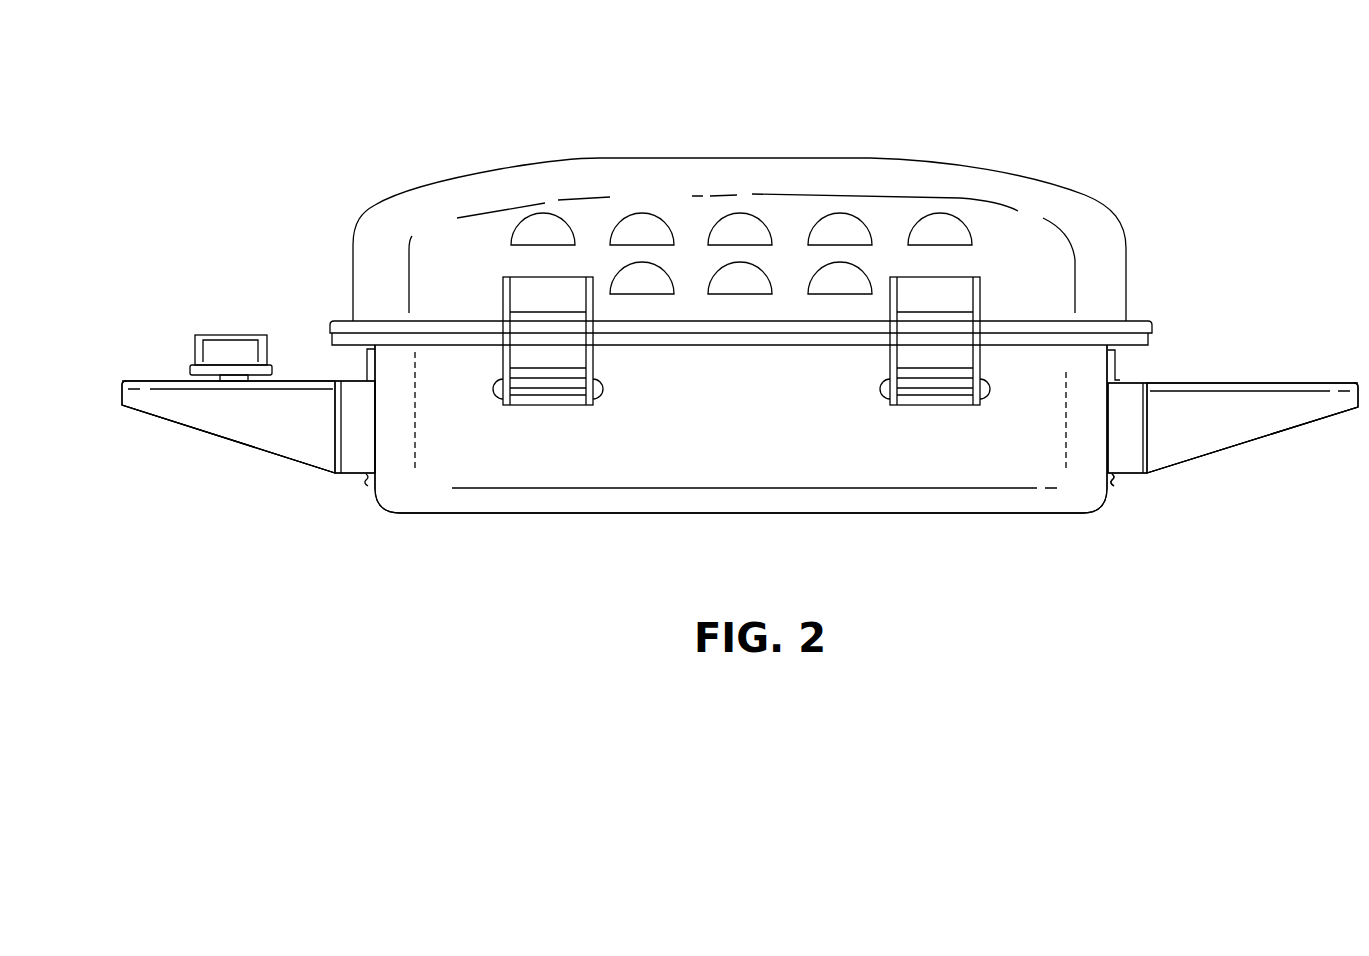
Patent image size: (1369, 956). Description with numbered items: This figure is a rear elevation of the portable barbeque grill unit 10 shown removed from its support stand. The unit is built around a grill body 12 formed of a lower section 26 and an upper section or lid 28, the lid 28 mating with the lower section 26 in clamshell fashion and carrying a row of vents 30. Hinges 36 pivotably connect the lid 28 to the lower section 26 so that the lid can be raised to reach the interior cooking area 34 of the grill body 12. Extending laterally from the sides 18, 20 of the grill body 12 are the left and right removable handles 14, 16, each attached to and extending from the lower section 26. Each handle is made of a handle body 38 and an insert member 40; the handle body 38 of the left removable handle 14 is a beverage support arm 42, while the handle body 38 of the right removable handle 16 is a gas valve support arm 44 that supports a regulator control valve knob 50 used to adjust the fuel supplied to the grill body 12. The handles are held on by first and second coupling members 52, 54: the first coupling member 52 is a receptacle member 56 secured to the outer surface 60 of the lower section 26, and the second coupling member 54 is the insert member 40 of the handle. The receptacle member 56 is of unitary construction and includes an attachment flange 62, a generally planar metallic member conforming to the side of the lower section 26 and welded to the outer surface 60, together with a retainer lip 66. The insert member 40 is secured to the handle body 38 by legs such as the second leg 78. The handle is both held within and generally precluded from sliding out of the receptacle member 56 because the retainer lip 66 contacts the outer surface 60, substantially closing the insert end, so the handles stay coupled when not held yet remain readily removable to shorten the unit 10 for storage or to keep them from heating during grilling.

The portable barbeque grill unit 10 is at (390, 150).
The grill body 12 is at (685, 516).
The left removable handle 14 is at (1290, 380).
The right removable handle 16 is at (205, 438).
The side of grill body 18 is at (1106, 428).
The side of grill body 20 is at (380, 457).
The lower section 26 is at (830, 465).
The lid 28 is at (918, 178).
The vents 30 is at (712, 228).
The cooking area 34 is at (845, 280).
The hinges 36 is at (595, 362).
The handle body 38 is at (142, 380).
The insert member 40 is at (345, 428).
The beverage support arm 42 is at (1228, 406).
The gas valve support arm 44 is at (185, 408).
The regulator control valve knob 50 is at (246, 334).
The first coupling member 52 is at (366, 362).
The second coupling member 54 is at (343, 480).
The receptacle member 56 is at (1115, 490).
The outer surface 60 is at (578, 462).
The attachment flange 62 is at (1117, 368).
The retainer lip 66 is at (370, 481).
The second leg 78 is at (357, 407).